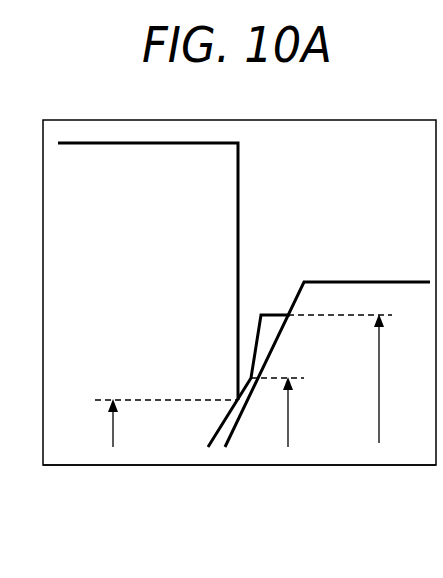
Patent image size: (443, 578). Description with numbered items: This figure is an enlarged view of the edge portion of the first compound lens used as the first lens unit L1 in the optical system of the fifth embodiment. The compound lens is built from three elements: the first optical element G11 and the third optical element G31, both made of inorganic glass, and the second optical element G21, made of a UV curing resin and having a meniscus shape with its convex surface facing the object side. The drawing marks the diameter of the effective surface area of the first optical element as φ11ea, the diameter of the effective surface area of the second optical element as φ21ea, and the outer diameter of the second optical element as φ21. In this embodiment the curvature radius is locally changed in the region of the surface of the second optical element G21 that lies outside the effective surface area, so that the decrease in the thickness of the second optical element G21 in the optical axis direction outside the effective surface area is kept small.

The first optical element G11 is at (228, 172).
The second optical element G21 is at (273, 322).
The third optical element G31 is at (338, 290).
The outer diameter of the second optical element 21 is at (343, 366).
The diameter of the effective surface area of the second optical element 21ea is at (301, 400).
The diameter of the effective surface area of the first optical element 11ea is at (164, 409).
The first lens unit L1 is at (237, 465).